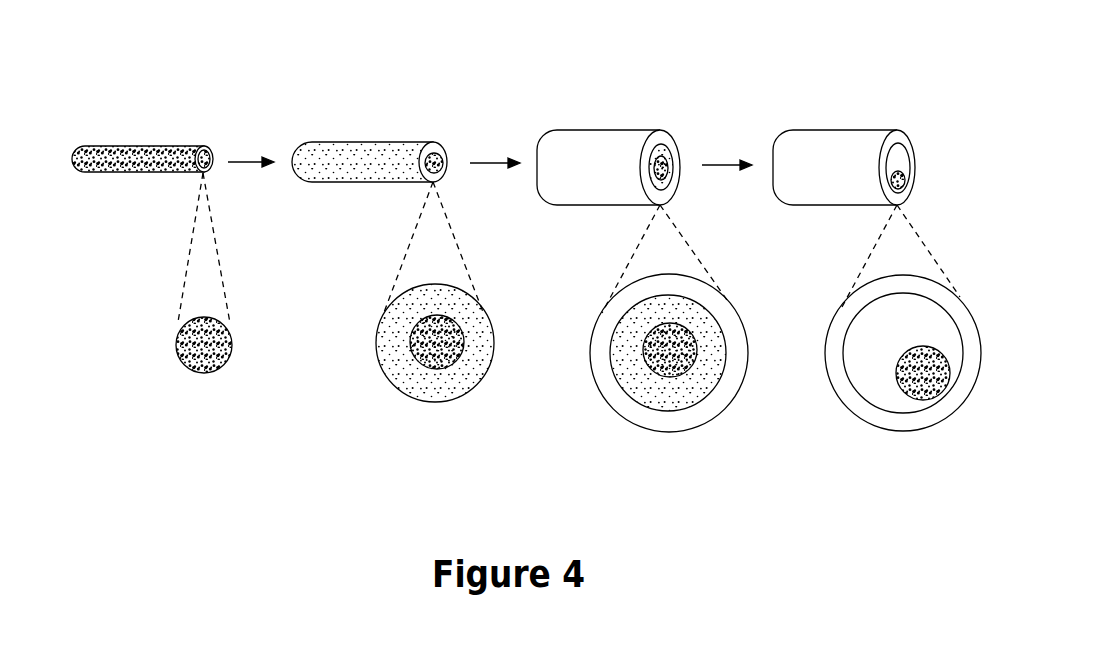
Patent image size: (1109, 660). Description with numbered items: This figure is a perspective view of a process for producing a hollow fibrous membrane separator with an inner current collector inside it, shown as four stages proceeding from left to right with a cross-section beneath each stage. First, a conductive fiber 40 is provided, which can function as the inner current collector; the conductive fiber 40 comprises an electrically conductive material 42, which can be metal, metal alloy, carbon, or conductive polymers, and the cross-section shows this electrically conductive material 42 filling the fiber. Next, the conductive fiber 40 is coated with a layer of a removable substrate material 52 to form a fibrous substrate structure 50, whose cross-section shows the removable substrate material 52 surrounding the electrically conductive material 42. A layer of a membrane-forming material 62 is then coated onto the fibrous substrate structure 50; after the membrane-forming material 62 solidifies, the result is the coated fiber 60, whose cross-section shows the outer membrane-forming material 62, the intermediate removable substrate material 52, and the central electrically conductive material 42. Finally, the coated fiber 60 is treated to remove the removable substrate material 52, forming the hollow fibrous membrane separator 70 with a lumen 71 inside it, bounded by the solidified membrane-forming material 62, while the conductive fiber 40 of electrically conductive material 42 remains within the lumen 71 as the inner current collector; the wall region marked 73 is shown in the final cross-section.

The conductive fiber 40 is at (140, 150).
The electrically conductive material 42 is at (198, 352).
The fibrous substrate structure 50 is at (368, 152).
The removable substrate material 52 is at (403, 367).
The coated fiber 60 is at (587, 157).
The membrane-forming material 62 is at (605, 337).
The hollow fibrous membrane separator 70 is at (828, 152).
The lumen 71 is at (877, 376).
The tube wall 73 is at (818, 398).